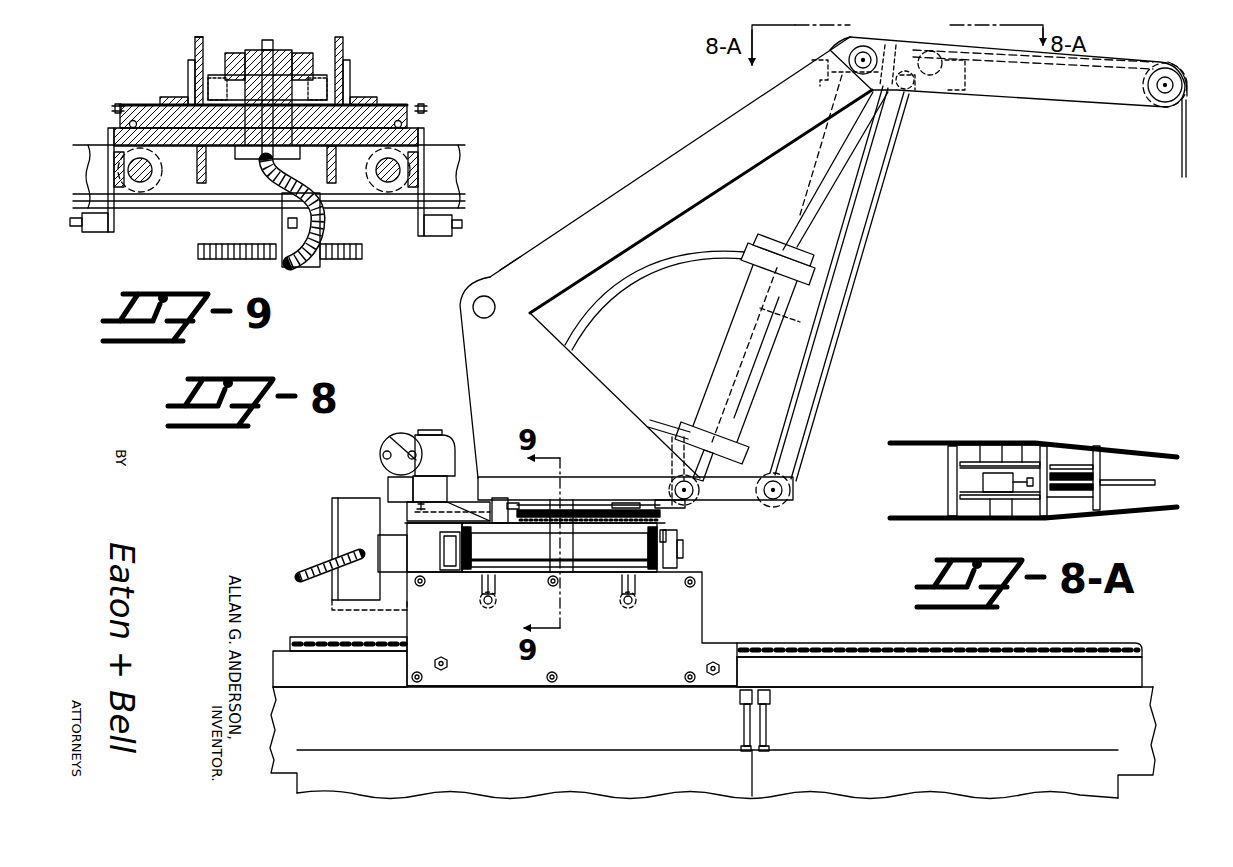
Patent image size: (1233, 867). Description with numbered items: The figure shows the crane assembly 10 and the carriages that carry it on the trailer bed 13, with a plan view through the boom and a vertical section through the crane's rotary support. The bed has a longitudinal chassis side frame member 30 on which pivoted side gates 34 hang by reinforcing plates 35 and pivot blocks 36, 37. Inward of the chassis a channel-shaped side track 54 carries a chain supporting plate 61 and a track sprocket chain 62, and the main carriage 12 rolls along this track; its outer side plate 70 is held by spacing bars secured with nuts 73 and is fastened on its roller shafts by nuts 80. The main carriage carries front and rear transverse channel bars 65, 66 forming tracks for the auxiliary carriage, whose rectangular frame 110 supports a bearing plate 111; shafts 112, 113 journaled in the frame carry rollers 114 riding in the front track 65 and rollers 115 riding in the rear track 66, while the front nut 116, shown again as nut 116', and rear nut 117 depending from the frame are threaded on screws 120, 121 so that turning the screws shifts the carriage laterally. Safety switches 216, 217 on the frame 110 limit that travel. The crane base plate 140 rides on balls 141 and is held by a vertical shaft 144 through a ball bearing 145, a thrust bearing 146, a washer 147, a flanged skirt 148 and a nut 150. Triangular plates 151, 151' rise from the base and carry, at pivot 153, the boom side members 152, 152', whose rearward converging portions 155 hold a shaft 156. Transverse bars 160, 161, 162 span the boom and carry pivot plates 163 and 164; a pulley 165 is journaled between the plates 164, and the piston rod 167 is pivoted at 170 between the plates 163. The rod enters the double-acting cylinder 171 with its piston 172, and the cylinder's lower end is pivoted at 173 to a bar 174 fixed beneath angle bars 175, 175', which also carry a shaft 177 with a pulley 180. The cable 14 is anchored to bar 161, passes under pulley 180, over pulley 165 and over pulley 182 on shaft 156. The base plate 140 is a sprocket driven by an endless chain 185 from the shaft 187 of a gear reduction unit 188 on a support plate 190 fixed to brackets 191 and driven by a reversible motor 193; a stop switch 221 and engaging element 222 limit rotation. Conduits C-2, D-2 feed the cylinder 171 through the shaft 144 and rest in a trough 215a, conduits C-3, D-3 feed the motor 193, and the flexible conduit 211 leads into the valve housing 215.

In FIG. 9, the crane assembly 10 is at (197, 43).
In FIG. 8, the crane assembly 10 is at (544, 241).
In FIG. 8-A, the crane assembly 10 is at (958, 440).
In FIG. 8, the main carriage 12 is at (705, 600).
In FIG. 8, the truck bed 13 is at (1158, 729).
In FIG. 8, the cable 14 is at (860, 282).
In FIG. 8-A, the cable 14 is at (1130, 482).
In FIG. 8, the chassis side frame member 30 is at (1152, 755).
In FIG. 8, the side panel 34 is at (495, 755).
In FIG. 8, the reinforcing plate 35 is at (739, 750).
In FIG. 8, the block 36 is at (743, 730).
In FIG. 8, the block 37 is at (738, 712).
In FIG. 8, the side track 54 is at (300, 688).
In FIG. 8, the chain supporting plate 61 is at (355, 641).
In FIG. 8, the track sprocket chain 62 is at (308, 660).
In FIG. 9, the front auxiliary carriage track 65 is at (97, 145).
In FIG. 8, the front auxiliary carriage track 65 is at (440, 556).
In FIG. 8, the rear auxiliary carriage track 66 is at (677, 541).
In FIG. 8, the outer main carriage side plate 70 is at (625, 687).
In FIG. 8, the nuts 73 is at (423, 586).
In FIG. 8, the nuts 80 is at (446, 664).
In FIG. 8, the rectangular frame 110 is at (591, 572).
In FIG. 9, the bearing plate 111 is at (424, 140).
In FIG. 8, the bearing plate 111 is at (606, 527).
In FIG. 9, the front shaft 112 is at (139, 184).
In FIG. 9, the rear shaft 113 is at (392, 201).
In FIG. 9, the roller 114 is at (164, 194).
In FIG. 8, the roller 114 is at (463, 553).
In FIG. 8, the roller 115 is at (684, 555).
In FIG. 9, the nut 116 is at (281, 230).
In FIG. 8, the pin 116' is at (505, 614).
In FIG. 8, the nut 117 is at (632, 612).
In FIG. 9, the front threaded shaft 120 is at (210, 259).
In FIG. 8, the front threaded shaft 120 is at (480, 608).
In FIG. 8, the rear threaded shaft 121 is at (622, 608).
In FIG. 9, the crane base plate 140 is at (140, 105).
In FIG. 9, the balls 141 is at (405, 110).
In FIG. 9, the vertical pivot shaft 144 is at (274, 47).
In FIG. 9, the ball bearing 145 is at (164, 103).
In FIG. 9, the thrust bearing 146 is at (335, 92).
In FIG. 9, the washer 147 is at (302, 67).
In FIG. 9, the flanged skirt 148 is at (227, 74).
In FIG. 9, the nut 150 is at (250, 52).
In FIG. 9, the boom-supporting plate 151 is at (177, 71).
In FIG. 8, the boom-supporting plate 151 is at (565, 377).
In FIG. 9, the boom-supporting plate 151' is at (365, 62).
In FIG. 8, the boom side member 152 is at (681, 175).
In FIG. 8-A, the boom side member 152 is at (1030, 531).
In FIG. 8-A, the boom side member 152' is at (1033, 433).
In FIG. 8, the boom pivot 153 is at (473, 309).
In FIG. 8, the converging portion 155 is at (1045, 100).
In FIG. 8, the shaft 156 is at (1148, 86).
In FIG. 8, the transverse reinforcing bar 160 is at (828, 69).
In FIG. 8-A, the transverse reinforcing bar 160 is at (948, 489).
In FIG. 8, the transverse reinforcing bar 161 is at (910, 45).
In FIG. 8-A, the transverse reinforcing bar 161 is at (1033, 445).
In FIG. 8, the transverse reinforcing bar 162 is at (965, 78).
In FIG. 8-A, the transverse reinforcing bar 162 is at (1100, 445).
In FIG. 8, the pivot plates 163 is at (886, 46).
In FIG. 8-A, the pivot plates 163 is at (958, 464).
In FIG. 8, the pivot plates 164 is at (942, 90).
In FIG. 8-A, the pivot plates 164 is at (1096, 478).
In FIG. 8, the pulley 165 is at (920, 100).
In FIG. 8-A, the pulley 165 is at (1060, 470).
In FIG. 8, the piston rod 167 is at (808, 185).
In FIG. 8-A, the piston rod 167 is at (1010, 518).
In FIG. 8, the pivot shaft 170 is at (850, 56).
In FIG. 8-A, the pivot shaft 170 is at (993, 493).
In FIG. 8, the double-acting cylinder 171 is at (710, 357).
In FIG. 8, the piston 172 is at (755, 318).
In FIG. 8, the cylinder pivot 173 is at (697, 492).
In FIG. 8, the transverse bar 174 is at (662, 504).
In FIG. 9, the frame member 175 is at (172, 81).
In FIG. 8, the frame member 175 is at (635, 471).
In FIG. 9, the frame member 175' is at (372, 75).
In FIG. 8, the transverse shaft 177 is at (788, 492).
In FIG. 8, the pulley 180 is at (801, 474).
In FIG. 8, the pulley 182 is at (1188, 73).
In FIG. 9, the sprocket chain 185 is at (115, 110).
In FIG. 8, the sprocket chain 185 is at (585, 508).
In FIG. 8, the shaft 187 is at (430, 505).
In FIG. 8, the gear reduction unit 188 is at (433, 434).
In FIG. 8, the motor support plate 190 is at (388, 492).
In FIG. 8, the brackets 191 is at (390, 553).
In FIG. 8, the reversible motor 193 is at (401, 437).
In FIG. 8, the flexible conduit 211 is at (312, 557).
In FIG. 8, the housing 215 is at (332, 515).
In FIG. 8, the U-shaped trough 215a is at (369, 611).
In FIG. 9, the safety switch 216 is at (435, 237).
In FIG. 9, the safety switch 217 is at (90, 232).
In FIG. 8, the safety stop switch 221 is at (499, 498).
In FIG. 8, the switch engaging element 222 is at (628, 503).
In FIG. 8, the conduit C-2 is at (658, 418).
In FIG. 8, the conduit C-3 is at (385, 457).
In FIG. 9, the conduit D-2 is at (292, 38).
In FIG. 8, the conduit D-2 is at (680, 248).
In FIG. 8, the conduit D-3 is at (383, 446).